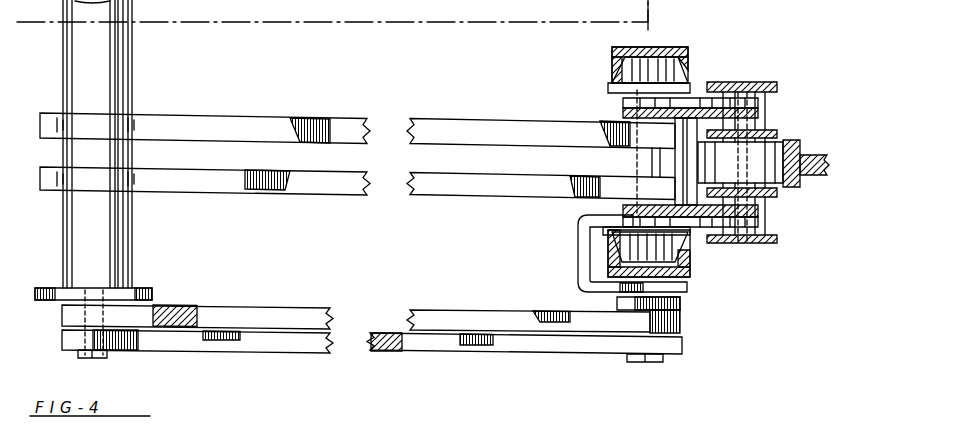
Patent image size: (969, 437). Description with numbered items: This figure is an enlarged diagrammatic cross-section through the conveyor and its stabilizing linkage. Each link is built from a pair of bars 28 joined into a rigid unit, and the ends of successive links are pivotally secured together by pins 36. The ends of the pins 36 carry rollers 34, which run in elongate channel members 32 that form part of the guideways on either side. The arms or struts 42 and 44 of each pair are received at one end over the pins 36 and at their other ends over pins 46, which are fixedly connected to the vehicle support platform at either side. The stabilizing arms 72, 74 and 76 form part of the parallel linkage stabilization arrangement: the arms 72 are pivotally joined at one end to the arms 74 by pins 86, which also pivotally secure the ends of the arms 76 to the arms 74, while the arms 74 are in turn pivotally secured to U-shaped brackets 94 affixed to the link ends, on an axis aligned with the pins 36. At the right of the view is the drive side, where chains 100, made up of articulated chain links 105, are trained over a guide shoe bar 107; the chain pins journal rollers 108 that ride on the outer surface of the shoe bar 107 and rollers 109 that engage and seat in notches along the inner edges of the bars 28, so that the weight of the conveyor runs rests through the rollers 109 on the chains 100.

The bars 28 is at (623, 110).
The channel members 32 is at (672, 48).
The rollers 34 is at (668, 77).
The pins 36 is at (645, 162).
The arms or struts 42 is at (453, 130).
The arms or struts 44 is at (466, 197).
The pins 46 is at (125, 250).
The stabilizing arms 72 is at (530, 350).
The stabilizing arms 74 is at (682, 306).
The stabilizing arms 76 is at (490, 297).
The pins 86 is at (645, 362).
The U-shaped brackets 94 is at (578, 272).
The chains 100 is at (746, 78).
The chain links 105 is at (770, 83).
The guide shoe bar 107 is at (797, 155).
The rollers 108 is at (767, 173).
The rollers 109 is at (762, 110).